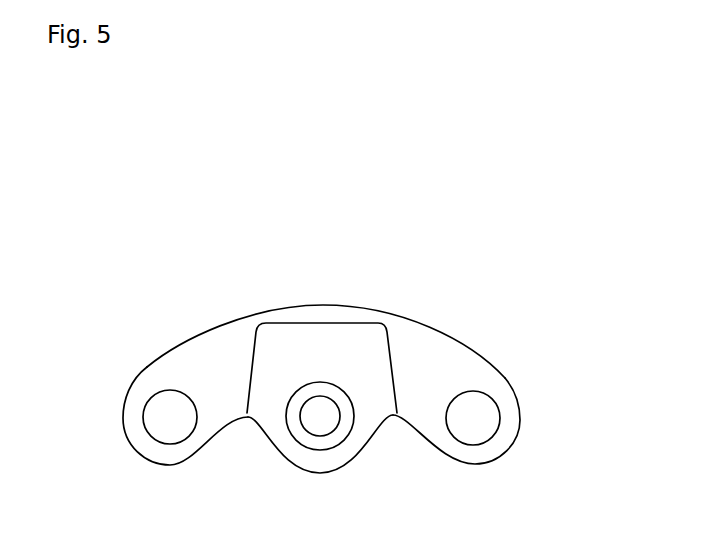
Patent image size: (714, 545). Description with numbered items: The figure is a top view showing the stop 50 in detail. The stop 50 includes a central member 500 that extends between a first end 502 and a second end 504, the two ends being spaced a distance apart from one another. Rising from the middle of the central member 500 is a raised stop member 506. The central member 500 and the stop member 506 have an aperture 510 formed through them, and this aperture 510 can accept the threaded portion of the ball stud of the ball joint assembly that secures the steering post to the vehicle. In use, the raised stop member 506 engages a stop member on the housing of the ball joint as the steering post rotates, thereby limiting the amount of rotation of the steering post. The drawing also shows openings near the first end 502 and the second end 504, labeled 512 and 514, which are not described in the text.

The stop 50 is at (524, 176).
The central member 500 is at (425, 357).
The first end 502 is at (147, 367).
The second end 504 is at (505, 380).
The raised stop member 506 is at (285, 342).
The aperture 510 is at (322, 417).
The left aperture 512 is at (162, 427).
The right aperture 514 is at (475, 420).